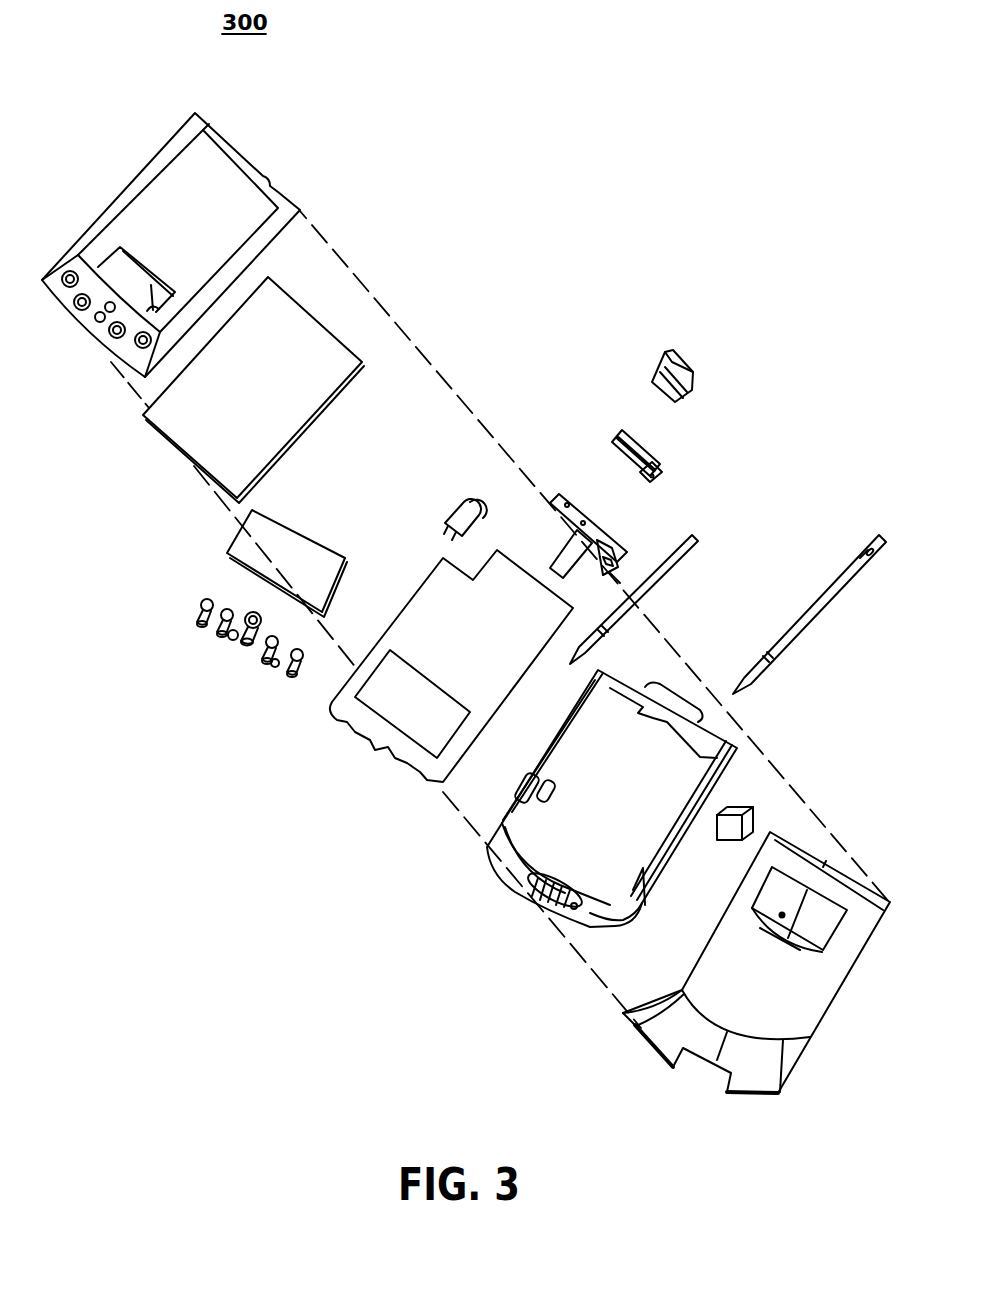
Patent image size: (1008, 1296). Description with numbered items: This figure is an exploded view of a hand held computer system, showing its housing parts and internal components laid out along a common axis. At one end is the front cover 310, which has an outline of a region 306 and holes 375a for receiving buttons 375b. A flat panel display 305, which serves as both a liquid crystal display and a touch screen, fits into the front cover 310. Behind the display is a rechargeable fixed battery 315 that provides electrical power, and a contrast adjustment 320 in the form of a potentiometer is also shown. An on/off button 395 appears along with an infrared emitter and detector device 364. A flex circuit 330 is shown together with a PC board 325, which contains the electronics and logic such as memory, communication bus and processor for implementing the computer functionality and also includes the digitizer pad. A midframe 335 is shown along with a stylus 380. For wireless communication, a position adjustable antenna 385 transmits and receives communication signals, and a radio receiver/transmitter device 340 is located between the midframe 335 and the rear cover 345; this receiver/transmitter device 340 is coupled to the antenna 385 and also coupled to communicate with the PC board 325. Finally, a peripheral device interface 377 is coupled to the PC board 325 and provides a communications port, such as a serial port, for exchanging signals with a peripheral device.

The flat panel display 305 is at (345, 326).
The region 306 is at (122, 273).
The front cover 310 is at (303, 210).
The rechargeable fixed battery 315 is at (231, 525).
The contrast adjustment 320 is at (455, 498).
The PC board 325 is at (326, 704).
The flex circuit 330 is at (608, 528).
The midframe 335 is at (740, 779).
The radio receiver/transmitter device 340 is at (760, 816).
The rear cover 345 is at (838, 1008).
The infrared emitter and detector device 364 is at (654, 446).
The holes 375a is at (69, 287).
The buttons 375b is at (200, 603).
The peripheral device interface 377 is at (633, 813).
The stylus 380 is at (857, 590).
The position adjustable antenna 385 is at (702, 541).
The on/off button 395 is at (688, 353).